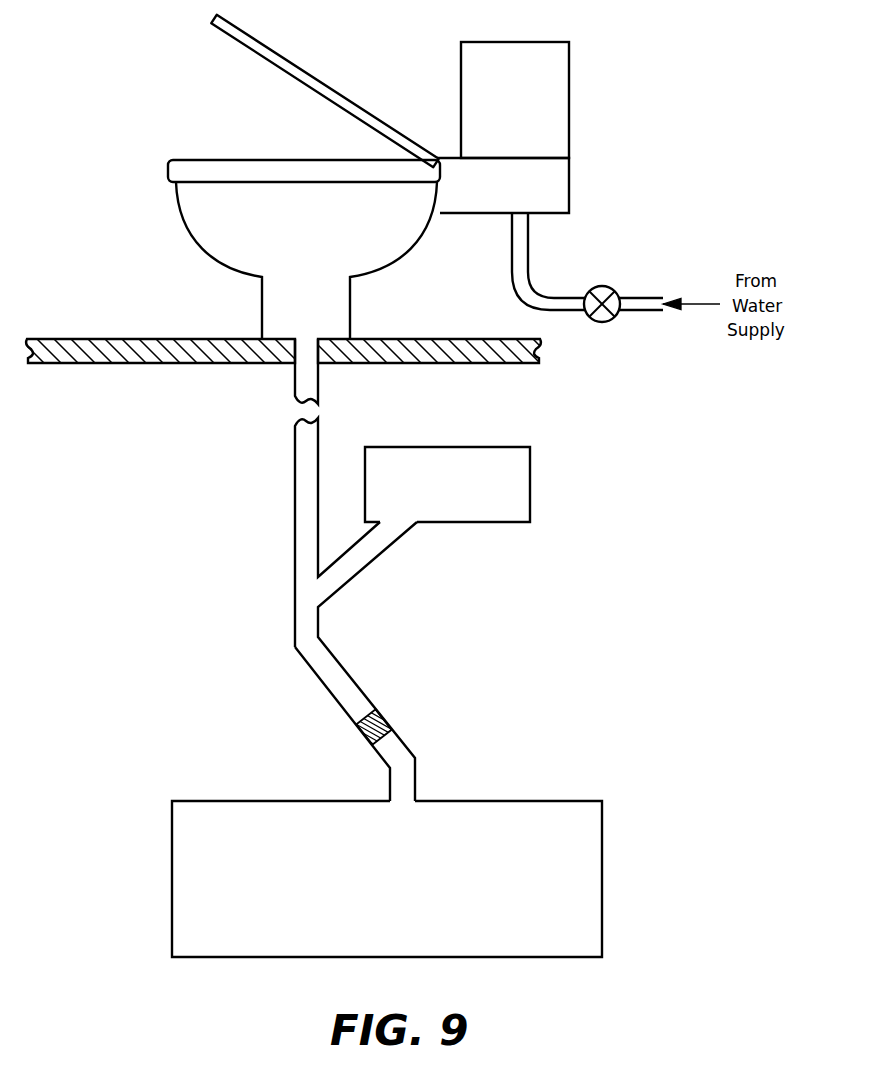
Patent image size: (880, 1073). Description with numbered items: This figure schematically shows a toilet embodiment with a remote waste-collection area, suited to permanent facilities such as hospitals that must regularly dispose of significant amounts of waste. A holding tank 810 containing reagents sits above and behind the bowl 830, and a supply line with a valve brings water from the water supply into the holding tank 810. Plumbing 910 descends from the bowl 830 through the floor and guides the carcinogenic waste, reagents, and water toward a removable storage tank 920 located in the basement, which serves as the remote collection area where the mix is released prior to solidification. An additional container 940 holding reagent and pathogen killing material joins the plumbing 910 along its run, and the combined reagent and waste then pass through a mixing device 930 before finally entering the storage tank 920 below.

The holding tank 810 is at (535, 92).
The bowl 830 is at (268, 225).
The plumbing 910 is at (305, 463).
The storage tank 920 is at (558, 850).
The mixing device 930 is at (388, 718).
The additional container 940 is at (478, 489).